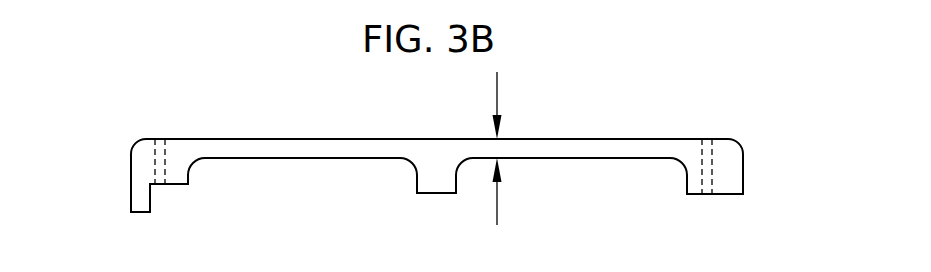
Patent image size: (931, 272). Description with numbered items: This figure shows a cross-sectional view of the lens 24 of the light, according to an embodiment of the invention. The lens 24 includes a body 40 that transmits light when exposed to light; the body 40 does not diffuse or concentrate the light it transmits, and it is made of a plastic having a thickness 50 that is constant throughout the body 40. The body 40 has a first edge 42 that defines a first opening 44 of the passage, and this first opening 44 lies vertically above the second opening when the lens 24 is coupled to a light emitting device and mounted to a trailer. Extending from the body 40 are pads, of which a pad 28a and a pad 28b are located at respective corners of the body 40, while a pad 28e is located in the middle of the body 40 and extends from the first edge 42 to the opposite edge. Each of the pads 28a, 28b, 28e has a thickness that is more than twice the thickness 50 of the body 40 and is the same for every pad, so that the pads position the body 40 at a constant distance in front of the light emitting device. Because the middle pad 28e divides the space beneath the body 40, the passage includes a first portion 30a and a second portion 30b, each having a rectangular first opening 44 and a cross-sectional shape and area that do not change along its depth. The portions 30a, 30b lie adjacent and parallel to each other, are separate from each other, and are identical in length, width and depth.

The lens 24 is at (420, 162).
The body 40 is at (257, 139).
The thickness 50 is at (497, 148).
The first edge 42 is at (452, 170).
The pad 28a is at (175, 184).
The pad 28b is at (723, 194).
The pad 28e is at (437, 194).
The first portion 30a is at (268, 198).
The second portion 30b is at (605, 199).
The first opening 44 is at (330, 198).